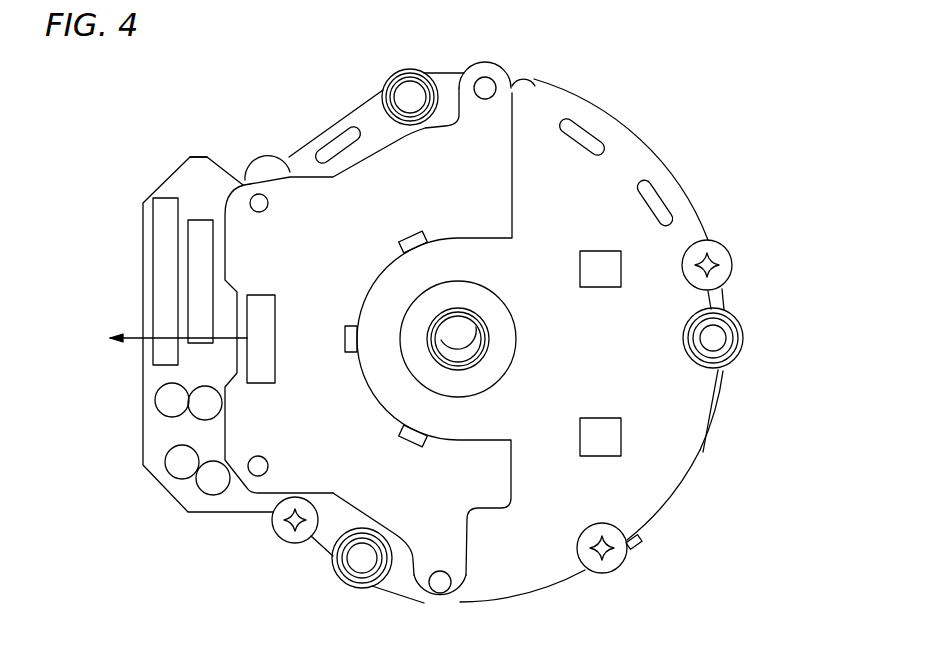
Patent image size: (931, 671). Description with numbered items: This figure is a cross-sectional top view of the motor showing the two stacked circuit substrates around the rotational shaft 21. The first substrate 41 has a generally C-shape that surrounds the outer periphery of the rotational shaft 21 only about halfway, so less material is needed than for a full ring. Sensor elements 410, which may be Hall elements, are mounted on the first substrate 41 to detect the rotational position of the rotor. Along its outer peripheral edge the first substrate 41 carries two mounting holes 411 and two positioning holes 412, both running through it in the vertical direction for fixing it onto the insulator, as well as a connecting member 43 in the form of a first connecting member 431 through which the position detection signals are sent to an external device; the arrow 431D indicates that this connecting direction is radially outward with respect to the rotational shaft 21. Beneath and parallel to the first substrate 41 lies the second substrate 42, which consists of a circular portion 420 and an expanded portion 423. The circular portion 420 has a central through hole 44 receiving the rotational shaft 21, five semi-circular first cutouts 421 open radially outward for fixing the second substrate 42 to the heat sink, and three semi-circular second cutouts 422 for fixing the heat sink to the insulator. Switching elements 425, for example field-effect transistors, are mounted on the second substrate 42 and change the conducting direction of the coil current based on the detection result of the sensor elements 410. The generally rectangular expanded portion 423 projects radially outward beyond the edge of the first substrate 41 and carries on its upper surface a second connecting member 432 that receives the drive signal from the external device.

The rotational shaft 21 is at (478, 345).
The first substrate 41 is at (497, 200).
The second substrate 42 is at (633, 142).
The connecting member 43 is at (160, 197).
The through hole 44 is at (510, 309).
The sensor elements 410 is at (410, 232).
The mounting holes 411 is at (483, 82).
The positioning holes 412 is at (267, 204).
The circular portion 420 is at (692, 458).
The first cutouts 421 is at (543, 69).
The second cutouts 422 is at (403, 74).
The expanded portion 423 is at (202, 168).
The switching elements 425 is at (620, 251).
The first connecting member 431 is at (267, 370).
The arrow 431D is at (133, 342).
The second connecting member 432 is at (160, 197).